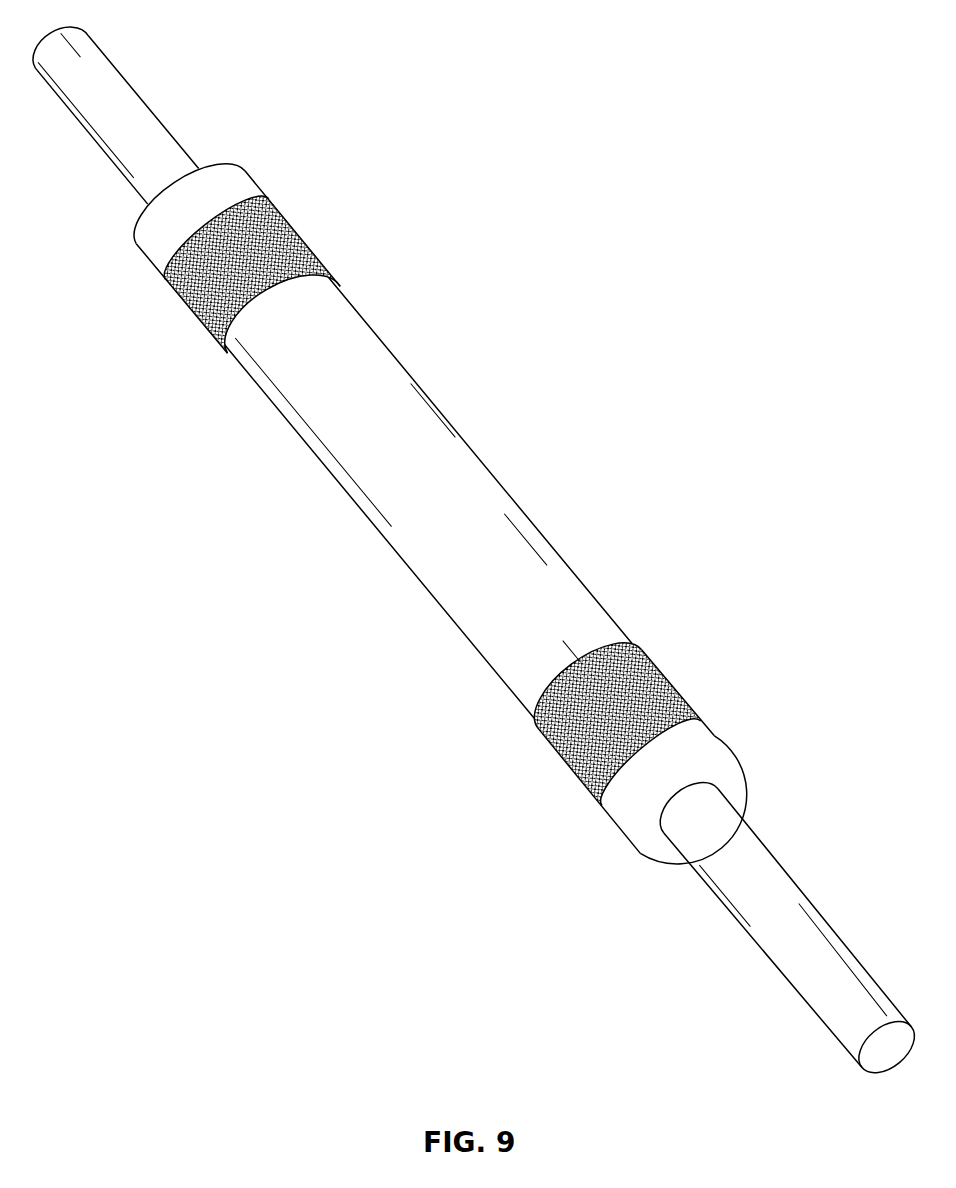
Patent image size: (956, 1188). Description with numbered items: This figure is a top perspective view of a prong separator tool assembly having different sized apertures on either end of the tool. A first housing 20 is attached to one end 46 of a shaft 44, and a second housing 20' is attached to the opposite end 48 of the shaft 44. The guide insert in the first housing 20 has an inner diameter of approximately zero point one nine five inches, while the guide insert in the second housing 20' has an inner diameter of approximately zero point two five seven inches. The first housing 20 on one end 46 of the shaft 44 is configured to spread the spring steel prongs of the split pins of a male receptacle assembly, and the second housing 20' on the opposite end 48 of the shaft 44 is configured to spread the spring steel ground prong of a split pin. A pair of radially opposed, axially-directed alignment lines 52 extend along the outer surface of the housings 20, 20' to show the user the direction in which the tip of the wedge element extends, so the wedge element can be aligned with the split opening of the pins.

The first housing 20 is at (787, 928).
The second housing 20' is at (111, 111).
The shaft 44 is at (403, 379).
The one end of shaft 46 is at (712, 756).
The opposite end of shaft 48 is at (232, 164).
The alignment lines 52 is at (132, 112).